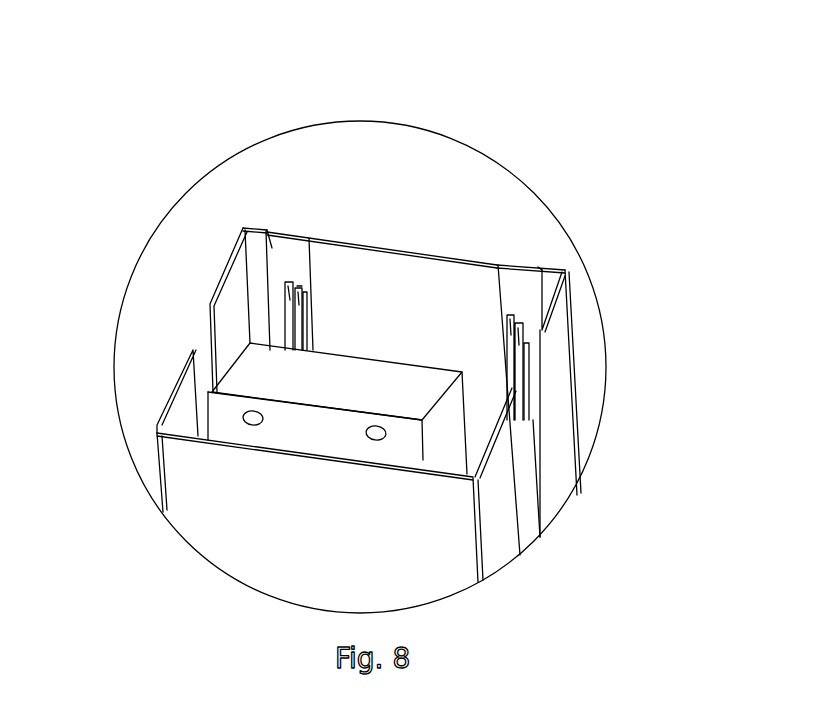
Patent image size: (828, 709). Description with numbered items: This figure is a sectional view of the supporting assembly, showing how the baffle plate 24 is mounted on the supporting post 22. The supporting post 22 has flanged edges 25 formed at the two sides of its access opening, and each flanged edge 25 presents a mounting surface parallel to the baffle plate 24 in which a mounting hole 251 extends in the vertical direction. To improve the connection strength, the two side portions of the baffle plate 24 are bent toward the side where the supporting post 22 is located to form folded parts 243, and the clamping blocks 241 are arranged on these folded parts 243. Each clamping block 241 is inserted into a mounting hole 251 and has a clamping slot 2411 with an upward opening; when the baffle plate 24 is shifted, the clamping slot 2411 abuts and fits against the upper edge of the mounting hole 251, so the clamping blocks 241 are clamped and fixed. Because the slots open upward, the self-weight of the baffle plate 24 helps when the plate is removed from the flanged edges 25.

The supporting post 22 is at (557, 474).
The baffle plate 24 is at (395, 245).
The clamping block 241 is at (529, 377).
The clamping slot 2411 is at (298, 278).
The folded part 243 is at (285, 233).
The flanged edge 25 is at (273, 248).
The mounting hole 251 is at (278, 297).